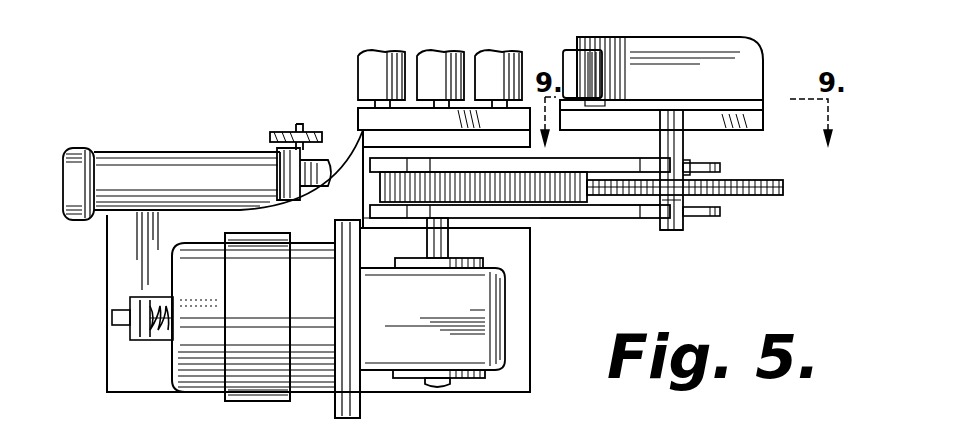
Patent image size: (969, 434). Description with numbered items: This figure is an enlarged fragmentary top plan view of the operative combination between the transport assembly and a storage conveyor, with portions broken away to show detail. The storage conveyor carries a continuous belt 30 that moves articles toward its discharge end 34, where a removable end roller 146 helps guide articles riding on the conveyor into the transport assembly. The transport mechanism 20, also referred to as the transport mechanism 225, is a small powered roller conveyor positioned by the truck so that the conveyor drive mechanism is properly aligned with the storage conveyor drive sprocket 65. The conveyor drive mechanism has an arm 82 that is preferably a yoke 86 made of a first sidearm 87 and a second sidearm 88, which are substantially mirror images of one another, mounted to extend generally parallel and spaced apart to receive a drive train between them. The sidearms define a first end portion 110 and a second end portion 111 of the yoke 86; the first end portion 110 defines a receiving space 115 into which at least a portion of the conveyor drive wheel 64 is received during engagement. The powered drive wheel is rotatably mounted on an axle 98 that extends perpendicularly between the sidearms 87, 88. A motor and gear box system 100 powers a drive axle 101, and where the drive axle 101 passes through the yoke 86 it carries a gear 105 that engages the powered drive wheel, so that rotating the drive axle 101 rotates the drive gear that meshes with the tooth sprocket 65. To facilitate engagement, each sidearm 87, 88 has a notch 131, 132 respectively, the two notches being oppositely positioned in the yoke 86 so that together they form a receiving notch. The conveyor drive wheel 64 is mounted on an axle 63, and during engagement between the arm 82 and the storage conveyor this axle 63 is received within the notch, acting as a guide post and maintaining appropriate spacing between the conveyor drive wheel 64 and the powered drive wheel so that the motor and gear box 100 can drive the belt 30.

The transport mechanism 20 is at (357, 73).
The transport mechanism 225 is at (489, 52).
The continuous belt 30 is at (668, 50).
The discharge end 34 is at (627, 42).
The removable end roller 146 is at (572, 52).
The yoke 86 is at (622, 162).
The gear 105 is at (385, 192).
The conveyor drive wheel 64 is at (783, 196).
The tooth sprocket 65 is at (783, 187).
The arm 82 is at (596, 220).
The first end portion 110 is at (647, 219).
The axle 98 is at (592, 220).
The receiving space 115 is at (685, 170).
The notch 132 is at (700, 165).
The second sidearm 88 is at (720, 168).
The first sidearm 87 is at (720, 211).
The notch 131 is at (690, 222).
The axle 63 is at (672, 231).
The drive axle 101 is at (446, 246).
The second end portion 111 is at (394, 220).
The motor and gear box system 100 is at (176, 248).